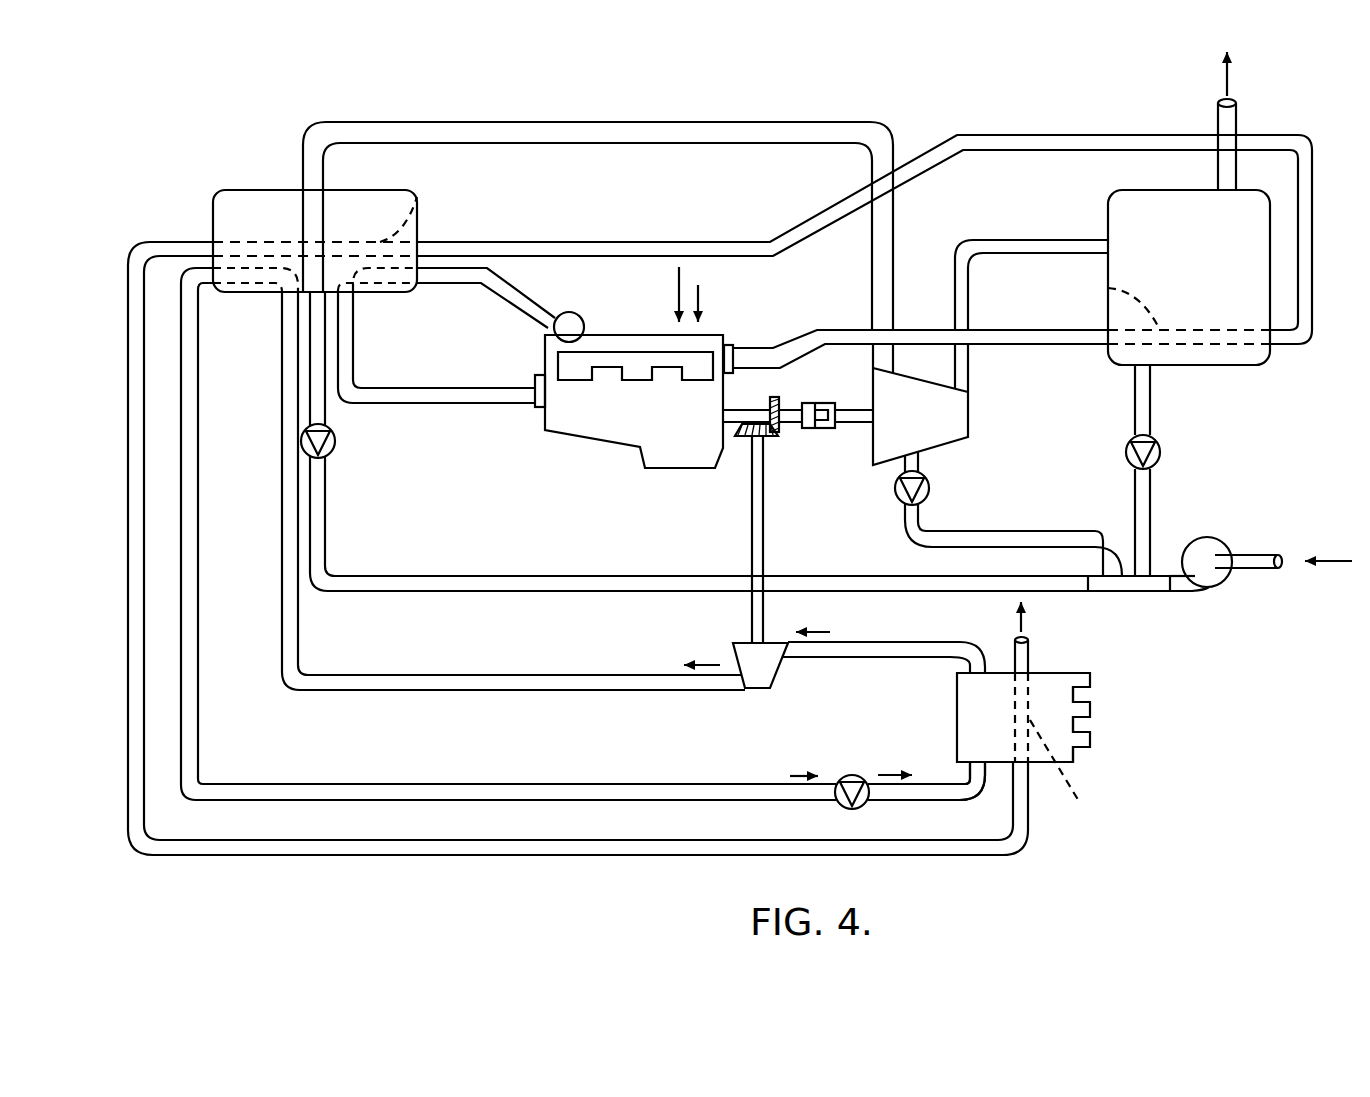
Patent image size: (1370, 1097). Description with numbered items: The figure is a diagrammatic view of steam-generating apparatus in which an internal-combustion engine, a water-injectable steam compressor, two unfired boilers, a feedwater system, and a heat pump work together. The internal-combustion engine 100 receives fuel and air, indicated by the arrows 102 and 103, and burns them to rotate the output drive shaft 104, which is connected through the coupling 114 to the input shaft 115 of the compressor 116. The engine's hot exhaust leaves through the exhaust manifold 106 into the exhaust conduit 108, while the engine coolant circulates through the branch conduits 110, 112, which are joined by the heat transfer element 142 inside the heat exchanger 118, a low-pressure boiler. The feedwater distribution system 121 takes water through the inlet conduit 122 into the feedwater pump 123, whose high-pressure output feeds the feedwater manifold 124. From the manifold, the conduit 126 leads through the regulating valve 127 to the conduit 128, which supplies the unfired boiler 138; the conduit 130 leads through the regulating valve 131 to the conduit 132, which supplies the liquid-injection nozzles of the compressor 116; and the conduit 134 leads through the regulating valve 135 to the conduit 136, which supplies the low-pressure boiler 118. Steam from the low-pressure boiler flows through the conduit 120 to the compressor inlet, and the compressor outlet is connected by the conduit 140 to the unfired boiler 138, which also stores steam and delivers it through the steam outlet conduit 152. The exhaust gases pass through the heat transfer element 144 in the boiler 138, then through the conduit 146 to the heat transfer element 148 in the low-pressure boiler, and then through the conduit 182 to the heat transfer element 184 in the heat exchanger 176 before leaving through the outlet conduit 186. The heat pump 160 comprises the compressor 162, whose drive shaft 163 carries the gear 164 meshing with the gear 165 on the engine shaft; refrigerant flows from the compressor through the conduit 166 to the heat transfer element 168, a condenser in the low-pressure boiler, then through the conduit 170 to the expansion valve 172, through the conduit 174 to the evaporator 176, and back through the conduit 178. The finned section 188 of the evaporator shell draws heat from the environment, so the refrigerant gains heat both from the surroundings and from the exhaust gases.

The internal-combustion engine 100 is at (576, 452).
The fuel supply arrow 102 is at (680, 275).
The air supply arrow 103 is at (699, 302).
The output drive shaft 104 is at (749, 414).
The exhaust manifold 106 is at (605, 357).
The exhaust conduit 108 is at (846, 332).
The branch conduit 110 is at (524, 304).
The branch conduit 112 is at (444, 398).
The coupling 114 is at (810, 432).
The input shaft 115 is at (850, 424).
The compressor 116 is at (962, 416).
The heat exchanger 118 is at (244, 184).
The conduit 120 is at (556, 125).
The feedwater distribution system 121 is at (1168, 594).
The inlet conduit 122 is at (1250, 569).
The feedwater pump 123 is at (1215, 541).
The feedwater manifold 124 is at (1128, 591).
The conduit 126 is at (1153, 500).
The regulating valve 127 is at (1162, 452).
The conduit 128 is at (1150, 402).
The conduit 130 is at (1002, 535).
The regulating valve 131 is at (931, 492).
The conduit 132 is at (925, 463).
The conduit 134 is at (411, 578).
The regulating valve 135 is at (336, 448).
The conduit 136 is at (320, 405).
The unfired boiler 138 is at (1278, 363).
The conduit 140 is at (1047, 242).
The heat transfer element 142 is at (388, 294).
The heat transfer element 144 is at (1107, 288).
The conduit 146 is at (988, 140).
The heat transfer element 148 is at (420, 203).
The steam outlet conduit 152 is at (1222, 120).
The heat pump 160 is at (723, 675).
The compressor 162 is at (756, 690).
The drive shaft 163 is at (752, 551).
The gear 164 is at (741, 440).
The gear 165 is at (773, 440).
The conduit 166 is at (420, 680).
The heat transfer element 168 is at (243, 294).
The conduit 170 is at (200, 775).
The expansion valve 172 is at (850, 774).
The conduit 174 is at (930, 786).
The heat exchanger 176 is at (1103, 763).
The conduit 178 is at (856, 645).
The conduit 182 is at (130, 500).
The heat transfer element 184 is at (1074, 774).
The outlet conduit 186 is at (1033, 662).
The finned section 188 is at (1096, 705).